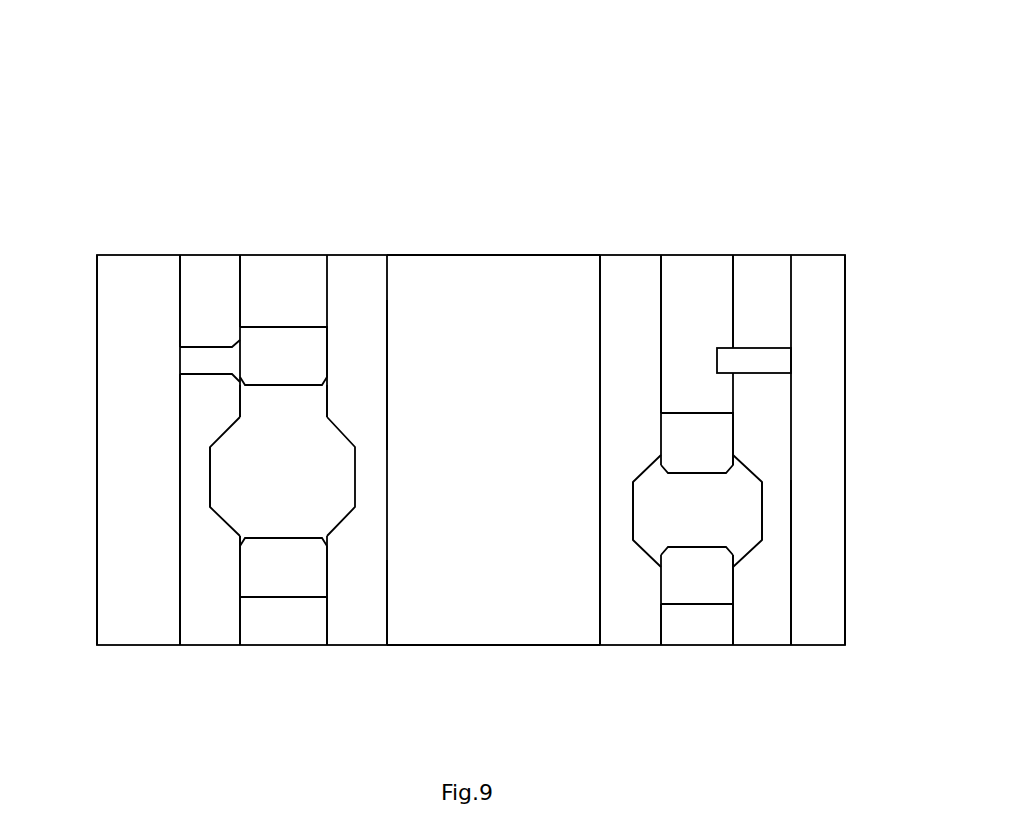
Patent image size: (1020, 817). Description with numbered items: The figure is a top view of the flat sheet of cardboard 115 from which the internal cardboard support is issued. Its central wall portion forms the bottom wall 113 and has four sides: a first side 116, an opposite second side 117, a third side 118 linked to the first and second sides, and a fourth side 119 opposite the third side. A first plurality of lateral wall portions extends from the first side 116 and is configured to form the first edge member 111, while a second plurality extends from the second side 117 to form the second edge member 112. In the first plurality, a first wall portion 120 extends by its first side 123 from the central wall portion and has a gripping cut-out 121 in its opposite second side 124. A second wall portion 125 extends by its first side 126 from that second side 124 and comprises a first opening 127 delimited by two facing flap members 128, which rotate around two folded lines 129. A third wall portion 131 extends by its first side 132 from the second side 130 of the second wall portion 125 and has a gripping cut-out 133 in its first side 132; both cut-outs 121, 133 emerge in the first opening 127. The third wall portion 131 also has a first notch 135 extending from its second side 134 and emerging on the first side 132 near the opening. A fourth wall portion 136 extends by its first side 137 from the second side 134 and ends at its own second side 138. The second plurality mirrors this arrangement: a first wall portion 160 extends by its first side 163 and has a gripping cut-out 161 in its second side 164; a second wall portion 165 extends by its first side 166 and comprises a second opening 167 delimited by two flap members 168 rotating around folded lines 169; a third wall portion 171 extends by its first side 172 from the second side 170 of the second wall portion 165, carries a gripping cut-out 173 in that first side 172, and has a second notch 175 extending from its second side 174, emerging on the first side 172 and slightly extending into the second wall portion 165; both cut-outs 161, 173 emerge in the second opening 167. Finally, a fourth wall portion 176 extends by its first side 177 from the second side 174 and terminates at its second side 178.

The sheet of cardboard 115 is at (377, 131).
The first edge member 111 is at (232, 207).
The second edge member 112 is at (703, 200).
The bottom wall 113 is at (474, 470).
The first side 116 is at (387, 377).
The second side 117 is at (600, 518).
The third side 118 is at (480, 255).
The fourth side 119 is at (493, 645).
The first wall portion 120 is at (334, 312).
The gripping cut-out 121 is at (355, 462).
The first side 123 is at (385, 575).
The second side 124 is at (327, 558).
The second wall portion 125 is at (298, 277).
The first side 126 is at (327, 622).
The first opening 127 is at (262, 422).
The flap members 128 is at (262, 367).
The folded lines 129 is at (267, 327).
The second side 130 is at (240, 287).
The third wall portion 131 is at (189, 295).
The first side 132 is at (238, 560).
The gripping cut-out 133 is at (212, 493).
The second side 134 is at (180, 593).
The first notch 135 is at (192, 358).
The fourth wall portion 136 is at (116, 460).
The first side 137 is at (180, 498).
The second side 138 is at (97, 587).
The first wall portion 160 is at (609, 312).
The gripping cut-out 161 is at (635, 506).
The first side 163 is at (603, 620).
The second side 164 is at (661, 363).
The second wall portion 165 is at (676, 332).
The first side 166 is at (661, 307).
The second opening 167 is at (676, 524).
The flap members 168 is at (676, 452).
The folded lines 169 is at (703, 413).
The second side 170 is at (733, 293).
The third wall portion 171 is at (741, 312).
The first side 172 is at (737, 592).
The gripping cut-out 173 is at (762, 505).
The second side 174 is at (792, 593).
The second notch 175 is at (765, 361).
The fourth wall portion 176 is at (794, 414).
The first side 177 is at (792, 520).
The second side 178 is at (845, 582).